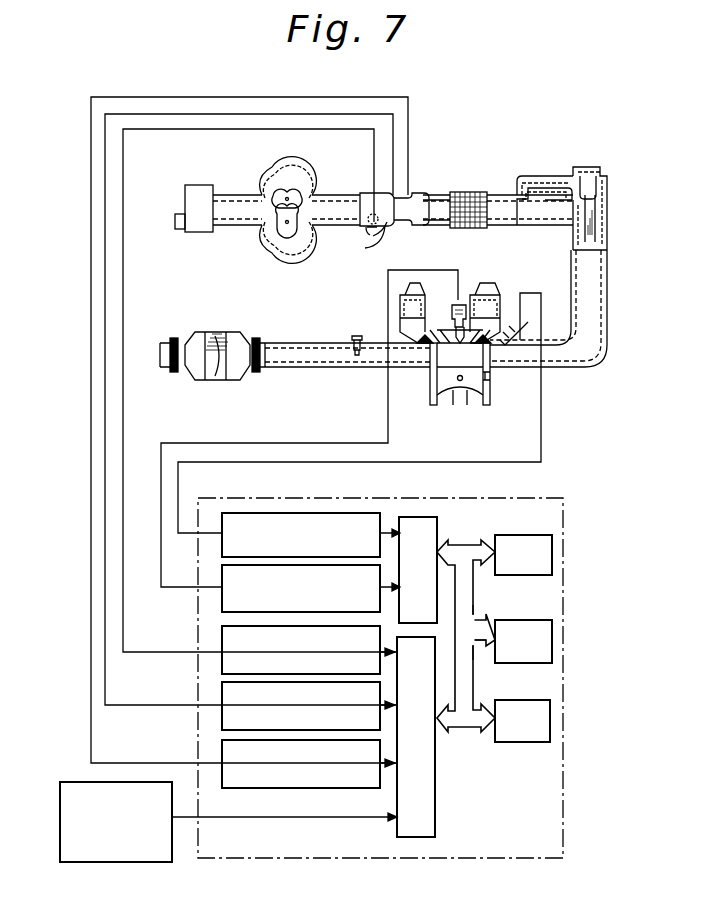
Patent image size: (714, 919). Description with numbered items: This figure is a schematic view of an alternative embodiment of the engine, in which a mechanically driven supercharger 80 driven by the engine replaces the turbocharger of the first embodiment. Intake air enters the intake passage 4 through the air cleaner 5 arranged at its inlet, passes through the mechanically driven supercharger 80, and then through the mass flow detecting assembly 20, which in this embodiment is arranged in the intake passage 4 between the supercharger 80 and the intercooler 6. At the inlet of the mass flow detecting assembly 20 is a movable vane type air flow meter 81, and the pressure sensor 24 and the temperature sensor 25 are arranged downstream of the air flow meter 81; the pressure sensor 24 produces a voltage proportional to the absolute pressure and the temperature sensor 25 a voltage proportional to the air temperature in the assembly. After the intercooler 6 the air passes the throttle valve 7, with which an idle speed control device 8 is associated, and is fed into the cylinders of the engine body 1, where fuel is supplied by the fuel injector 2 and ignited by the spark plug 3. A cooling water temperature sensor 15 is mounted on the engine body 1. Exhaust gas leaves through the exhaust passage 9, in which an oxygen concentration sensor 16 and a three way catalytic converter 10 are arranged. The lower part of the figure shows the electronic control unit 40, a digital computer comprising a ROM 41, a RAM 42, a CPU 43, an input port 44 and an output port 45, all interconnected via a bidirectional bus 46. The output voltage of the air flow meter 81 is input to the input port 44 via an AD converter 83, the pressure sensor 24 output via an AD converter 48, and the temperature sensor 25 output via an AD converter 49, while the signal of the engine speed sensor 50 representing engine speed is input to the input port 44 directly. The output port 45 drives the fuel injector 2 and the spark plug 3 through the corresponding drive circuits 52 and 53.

The engine body 1 is at (489, 401).
The fuel injector 2 is at (518, 337).
The spark plug 3 is at (459, 311).
The intake passage 4 is at (330, 196).
The air cleaner 5 is at (204, 189).
The intercooler 6 is at (472, 192).
The throttle valve 7 is at (534, 221).
The idle speed control device 8 is at (588, 166).
The exhaust passage 9 is at (325, 361).
The three way catalytic converter 10 is at (213, 359).
The cooling water temperature sensor 15 is at (486, 379).
The oxygen concentration sensor 16 is at (358, 336).
The mass flow detecting assembly 20 is at (422, 193).
The pressure sensor 24 is at (384, 195).
The temperature sensor 25 is at (406, 195).
The electronic control unit 40 is at (574, 540).
The ROM 41 is at (506, 540).
The RAM 42 is at (511, 622).
The CPU 43 is at (508, 699).
The input port 44 is at (438, 809).
The output port 45 is at (437, 534).
The bidirectional bus 46 is at (470, 730).
The AD converter 48 is at (208, 696).
The AD converter 49 is at (208, 748).
The engine speed sensor 50 is at (56, 822).
The drive circuit 52 is at (222, 520).
The drive circuit 53 is at (222, 566).
The mechanically driven supercharger 80 is at (280, 184).
The movable vane type air flow meter 81 is at (362, 242).
The AD converter 83 is at (216, 636).